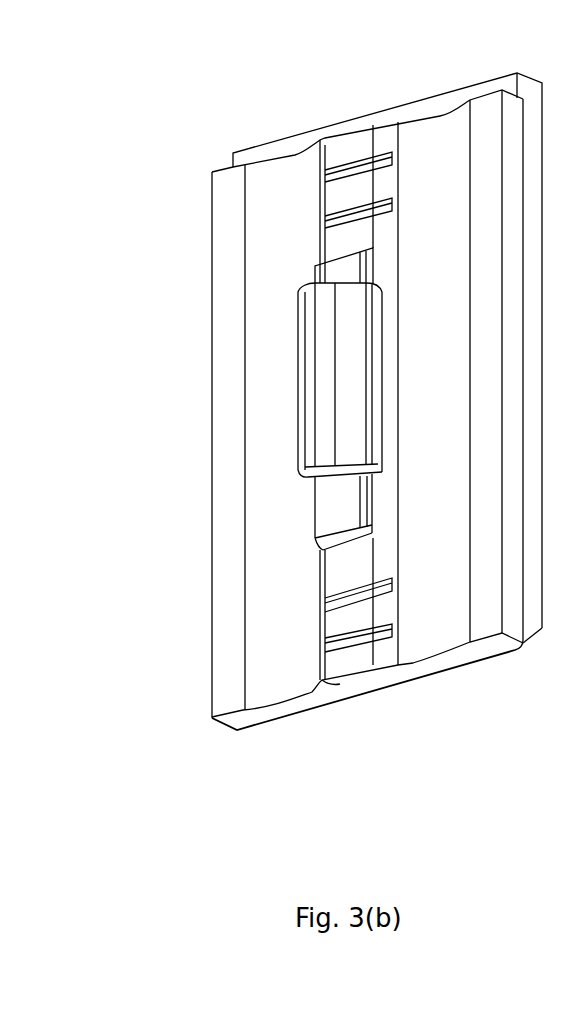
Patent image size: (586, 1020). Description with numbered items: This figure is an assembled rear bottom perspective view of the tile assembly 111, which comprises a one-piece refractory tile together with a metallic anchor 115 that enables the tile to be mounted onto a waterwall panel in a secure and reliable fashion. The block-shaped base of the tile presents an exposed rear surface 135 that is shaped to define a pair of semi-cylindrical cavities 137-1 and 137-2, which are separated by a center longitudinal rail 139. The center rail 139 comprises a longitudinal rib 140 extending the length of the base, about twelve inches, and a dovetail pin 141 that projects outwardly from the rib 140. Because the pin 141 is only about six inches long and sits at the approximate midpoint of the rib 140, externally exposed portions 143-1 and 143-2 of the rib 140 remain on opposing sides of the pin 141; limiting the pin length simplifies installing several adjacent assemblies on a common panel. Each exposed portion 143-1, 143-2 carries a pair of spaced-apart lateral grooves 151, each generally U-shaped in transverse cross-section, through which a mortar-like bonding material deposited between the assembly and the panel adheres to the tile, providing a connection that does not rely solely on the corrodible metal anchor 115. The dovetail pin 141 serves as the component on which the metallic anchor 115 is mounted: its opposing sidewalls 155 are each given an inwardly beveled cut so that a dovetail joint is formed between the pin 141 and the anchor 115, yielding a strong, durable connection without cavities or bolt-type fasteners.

The tile assembly 111 is at (181, 770).
The metallic anchor 115 is at (297, 364).
The exposed rear surface 135 is at (228, 244).
The semi-cylindrical cavity 137-1 is at (287, 177).
The semi-cylindrical cavity 137-2 is at (447, 138).
The center longitudinal rail 139 is at (288, 592).
The longitudinal rib 140 is at (347, 125).
The dovetail pin 141 is at (323, 513).
The exposed portion of rib 143-1 is at (383, 231).
The exposed portion of rib 143-2 is at (385, 569).
The lateral grooves 151 is at (372, 583).
The sidewalls 155 is at (374, 277).